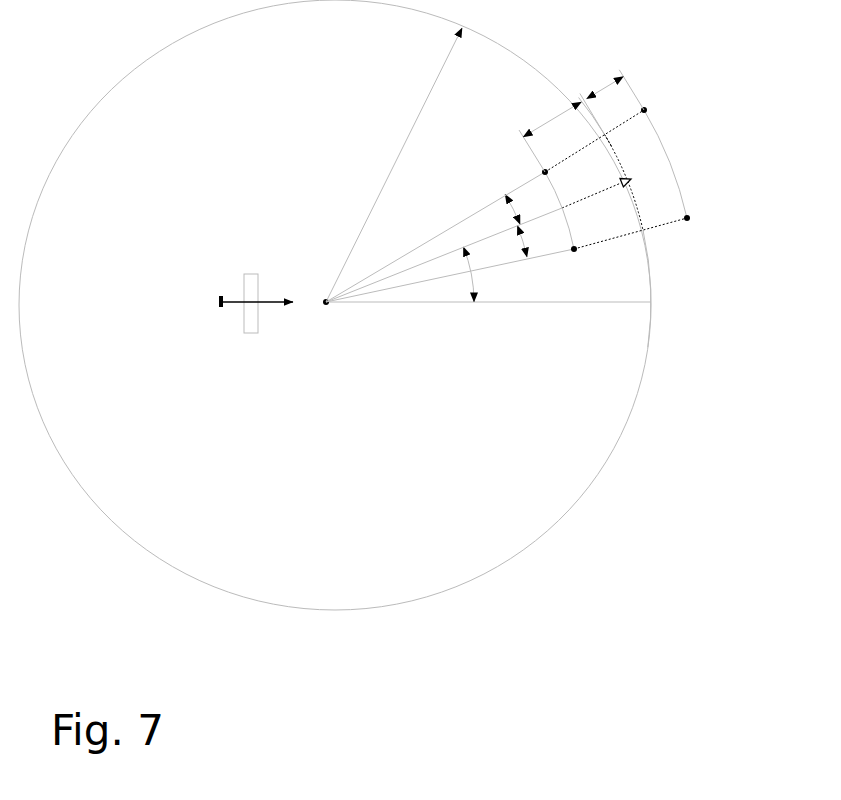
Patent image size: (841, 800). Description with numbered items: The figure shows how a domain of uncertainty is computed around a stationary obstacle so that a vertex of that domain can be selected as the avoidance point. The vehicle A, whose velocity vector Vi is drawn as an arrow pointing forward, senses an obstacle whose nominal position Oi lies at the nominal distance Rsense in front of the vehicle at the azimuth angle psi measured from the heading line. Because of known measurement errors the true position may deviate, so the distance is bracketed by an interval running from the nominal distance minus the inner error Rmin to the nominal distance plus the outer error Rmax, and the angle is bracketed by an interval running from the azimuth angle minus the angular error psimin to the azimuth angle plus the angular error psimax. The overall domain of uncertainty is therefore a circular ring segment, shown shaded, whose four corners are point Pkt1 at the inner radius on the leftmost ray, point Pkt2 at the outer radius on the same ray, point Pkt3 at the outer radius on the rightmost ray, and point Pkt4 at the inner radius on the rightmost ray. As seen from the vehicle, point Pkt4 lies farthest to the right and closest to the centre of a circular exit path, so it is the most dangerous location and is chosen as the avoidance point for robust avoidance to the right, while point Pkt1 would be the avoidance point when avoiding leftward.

The vehicle A is at (239, 298).
The velocity vector of the vehicle Vi is at (256, 290).
The nominal distance Rsense is at (394, 165).
The minimum distance error Rmin is at (565, 131).
The maximum distance error Rmax is at (613, 82).
The point 1 Pkt1 is at (542, 170).
The point 2 Pkt2 is at (646, 107).
The point 3 Pkt3 is at (689, 219).
The point 4 Pkt4 is at (577, 251).
The nominal position of the obstacle Oi is at (488, 223).
The azimuth angle psi is at (459, 274).
The minimum angle error psimin is at (528, 203).
The maximum angle error psimax is at (543, 241).